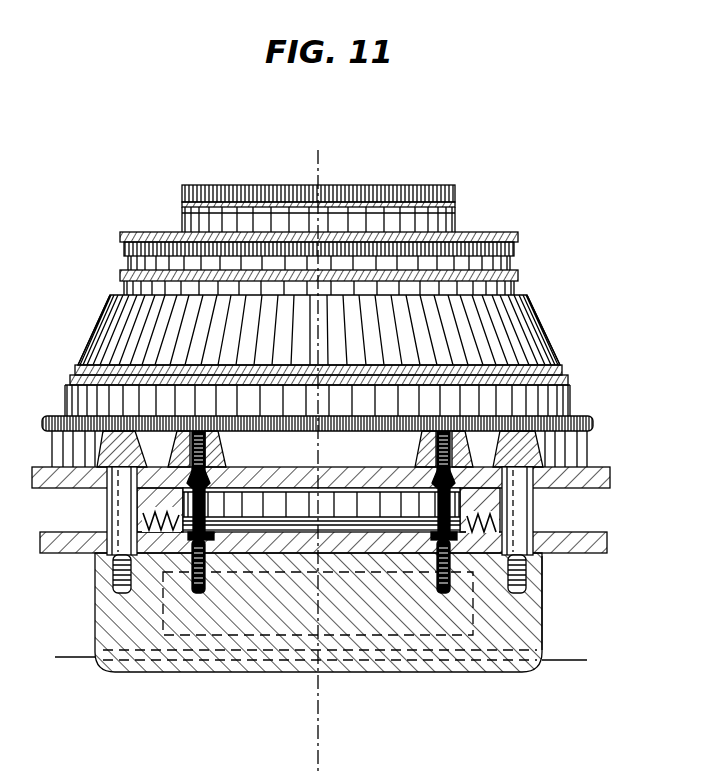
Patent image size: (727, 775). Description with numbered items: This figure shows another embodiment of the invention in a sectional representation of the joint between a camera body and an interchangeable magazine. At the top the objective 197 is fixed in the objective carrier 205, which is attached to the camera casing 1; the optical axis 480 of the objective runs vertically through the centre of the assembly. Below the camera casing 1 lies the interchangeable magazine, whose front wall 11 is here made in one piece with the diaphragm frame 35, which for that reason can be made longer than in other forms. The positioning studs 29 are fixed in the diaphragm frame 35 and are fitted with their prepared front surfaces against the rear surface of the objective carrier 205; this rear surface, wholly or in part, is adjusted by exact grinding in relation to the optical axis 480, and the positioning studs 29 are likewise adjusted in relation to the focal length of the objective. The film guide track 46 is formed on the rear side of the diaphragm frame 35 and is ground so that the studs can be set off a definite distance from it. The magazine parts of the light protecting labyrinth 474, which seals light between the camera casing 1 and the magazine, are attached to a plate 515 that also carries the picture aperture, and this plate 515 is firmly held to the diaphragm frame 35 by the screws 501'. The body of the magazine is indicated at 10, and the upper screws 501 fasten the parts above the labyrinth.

The optical axis 480 is at (318, 170).
The objective 197 is at (465, 221).
The objective carrier 205 is at (540, 318).
The fastening screws 501 is at (321, 481).
The camera casing 1 is at (598, 470).
The positioning studs 29 is at (118, 497).
The light protecting labyrinth 474 is at (146, 500).
The plate 515 is at (287, 541).
The front wall of the interchangeable magazine 11 is at (588, 533).
The base body 10 is at (76, 658).
The diaphragm frame 35 is at (543, 592).
The film guide track 46 is at (506, 655).
The screws 501' is at (322, 618).